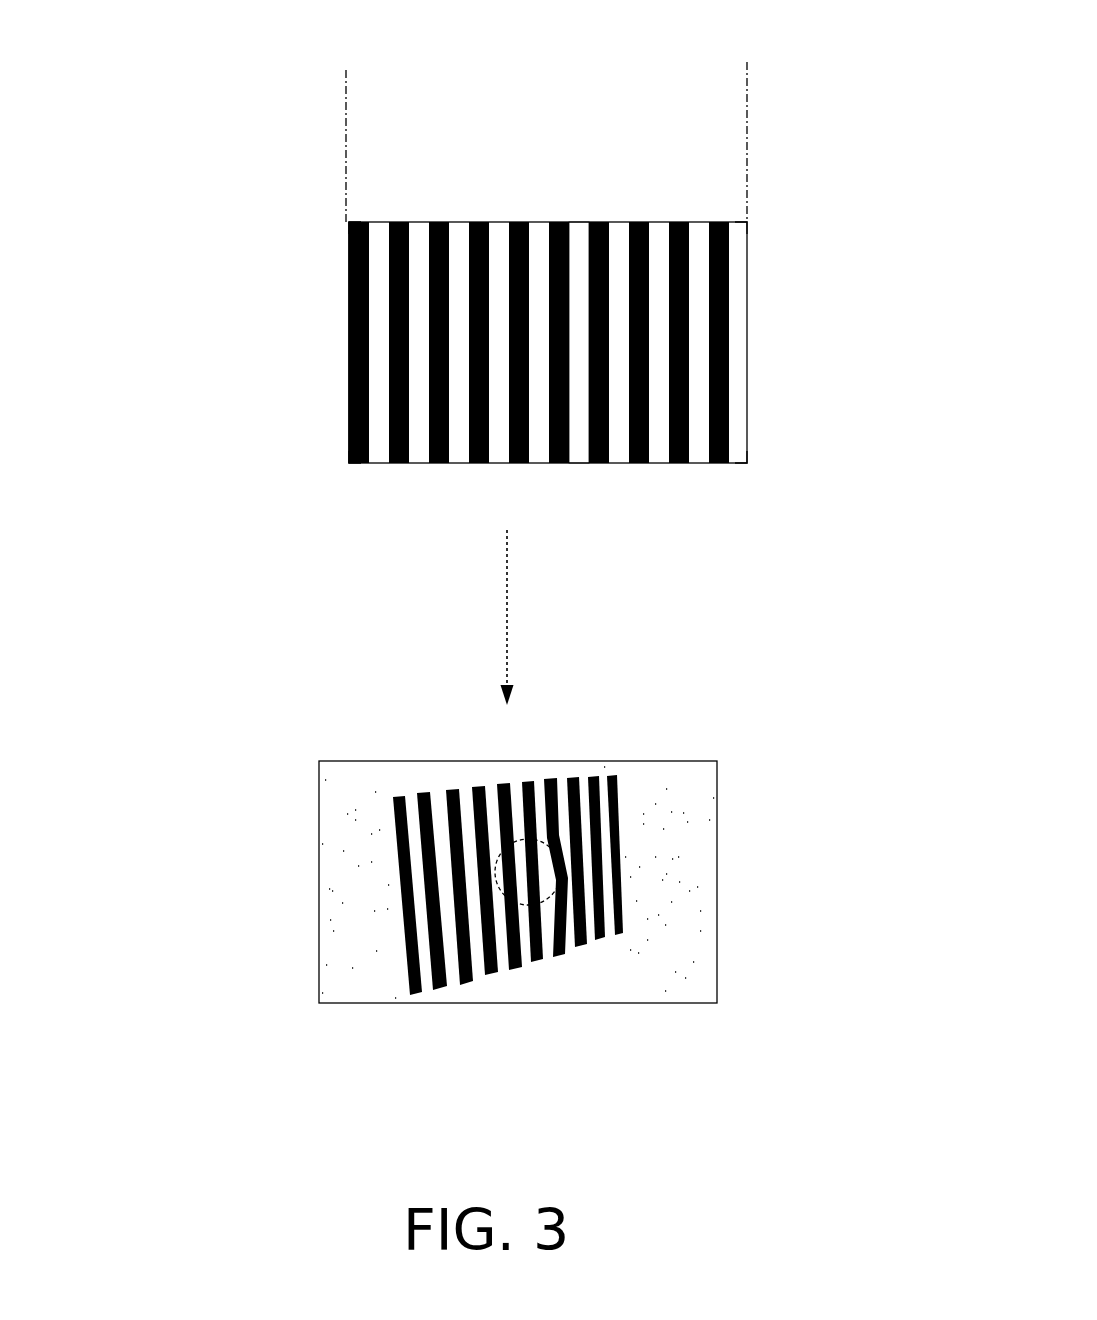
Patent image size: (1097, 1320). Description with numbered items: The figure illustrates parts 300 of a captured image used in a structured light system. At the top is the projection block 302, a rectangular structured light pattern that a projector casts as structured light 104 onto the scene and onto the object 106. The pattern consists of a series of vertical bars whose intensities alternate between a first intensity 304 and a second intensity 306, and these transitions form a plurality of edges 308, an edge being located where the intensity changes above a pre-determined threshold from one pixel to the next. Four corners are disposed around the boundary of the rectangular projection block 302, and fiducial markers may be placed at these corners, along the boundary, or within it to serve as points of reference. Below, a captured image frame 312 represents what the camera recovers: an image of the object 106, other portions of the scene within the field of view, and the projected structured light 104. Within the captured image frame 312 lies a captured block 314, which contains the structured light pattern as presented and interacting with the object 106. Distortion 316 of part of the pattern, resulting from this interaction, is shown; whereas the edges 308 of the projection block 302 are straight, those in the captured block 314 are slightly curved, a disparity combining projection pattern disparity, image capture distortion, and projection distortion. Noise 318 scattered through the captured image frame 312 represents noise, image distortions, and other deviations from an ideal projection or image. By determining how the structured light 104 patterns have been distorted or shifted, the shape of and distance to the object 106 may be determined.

The parts of a captured image 300 is at (777, 43).
The structured light 104 is at (345, 98).
The projection block 302 is at (488, 330).
The first intensity 304 is at (400, 220).
The second intensity 306 is at (580, 220).
The edge 308 is at (347, 337).
The captured image frame 312 is at (360, 760).
The captured block 314 is at (508, 884).
The object 106 is at (541, 827).
The distortion 316 is at (565, 865).
The noise 318 is at (352, 965).